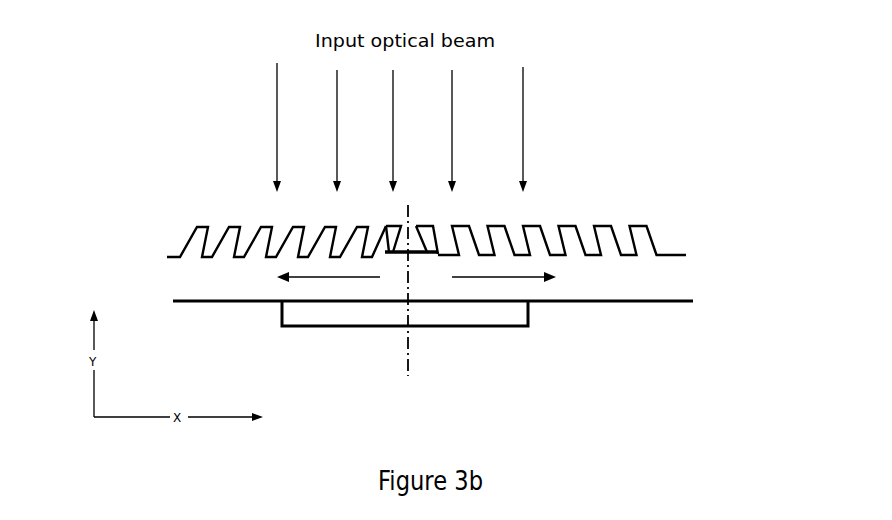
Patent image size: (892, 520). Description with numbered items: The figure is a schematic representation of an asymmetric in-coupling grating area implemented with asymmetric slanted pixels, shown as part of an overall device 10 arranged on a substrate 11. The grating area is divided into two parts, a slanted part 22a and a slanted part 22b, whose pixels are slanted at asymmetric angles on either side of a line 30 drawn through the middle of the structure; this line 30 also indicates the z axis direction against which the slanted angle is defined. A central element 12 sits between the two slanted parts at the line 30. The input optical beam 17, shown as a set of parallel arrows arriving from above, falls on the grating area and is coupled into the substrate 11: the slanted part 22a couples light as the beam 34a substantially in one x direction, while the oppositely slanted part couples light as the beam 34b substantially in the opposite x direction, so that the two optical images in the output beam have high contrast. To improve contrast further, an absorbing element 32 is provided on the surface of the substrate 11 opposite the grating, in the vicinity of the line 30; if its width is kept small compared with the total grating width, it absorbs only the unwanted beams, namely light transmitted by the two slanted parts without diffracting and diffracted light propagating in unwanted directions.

The optical device 10 is at (614, 128).
The substrate 11 is at (243, 292).
The central reflective element 12 is at (384, 200).
The input optical beam 17 is at (277, 138).
The slanted part 22a is at (222, 243).
The slanted part 22b is at (618, 240).
The line 30 is at (413, 372).
The detector 32 is at (482, 326).
The beam 34a is at (330, 278).
The beam 34b is at (527, 279).